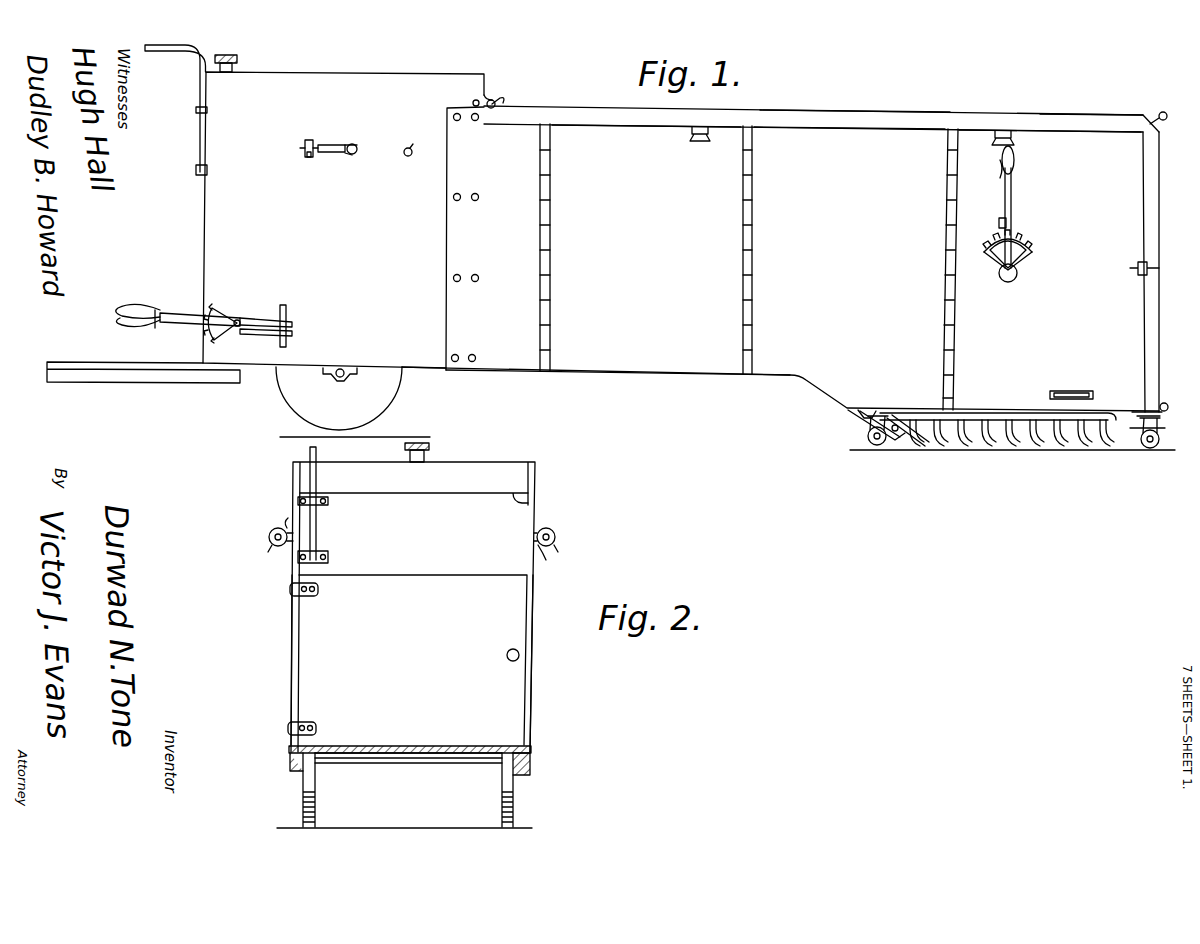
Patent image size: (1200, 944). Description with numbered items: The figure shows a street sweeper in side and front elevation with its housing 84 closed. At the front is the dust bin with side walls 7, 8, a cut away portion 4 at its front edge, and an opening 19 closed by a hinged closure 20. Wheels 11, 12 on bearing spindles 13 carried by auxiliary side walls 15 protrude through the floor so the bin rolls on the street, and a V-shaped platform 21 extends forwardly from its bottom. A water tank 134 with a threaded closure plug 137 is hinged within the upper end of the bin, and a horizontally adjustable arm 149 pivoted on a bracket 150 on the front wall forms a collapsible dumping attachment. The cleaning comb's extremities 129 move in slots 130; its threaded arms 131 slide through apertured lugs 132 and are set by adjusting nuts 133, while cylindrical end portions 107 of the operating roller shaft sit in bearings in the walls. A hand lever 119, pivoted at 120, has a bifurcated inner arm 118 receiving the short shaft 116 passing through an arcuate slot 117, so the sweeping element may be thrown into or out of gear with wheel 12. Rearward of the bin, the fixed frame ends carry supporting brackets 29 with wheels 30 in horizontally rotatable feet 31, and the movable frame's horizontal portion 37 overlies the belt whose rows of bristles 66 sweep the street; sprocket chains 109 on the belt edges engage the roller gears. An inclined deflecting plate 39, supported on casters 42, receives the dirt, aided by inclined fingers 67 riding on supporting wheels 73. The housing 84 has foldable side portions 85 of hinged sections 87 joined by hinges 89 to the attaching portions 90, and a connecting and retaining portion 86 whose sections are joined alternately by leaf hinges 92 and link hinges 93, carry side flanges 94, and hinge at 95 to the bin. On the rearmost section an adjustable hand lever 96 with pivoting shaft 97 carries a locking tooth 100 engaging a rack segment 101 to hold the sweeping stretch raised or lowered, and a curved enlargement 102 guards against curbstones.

In FIG. 2, the cut away portion 4 is at (543, 500).
In FIG. 1, the side wall 7 is at (386, 268).
In FIG. 2, the side wall 7 is at (289, 672).
In FIG. 2, the side wall 8 is at (536, 693).
In FIG. 2, the wheel 11 is at (397, 790).
In FIG. 1, the wheel 12 is at (424, 384).
In FIG. 2, the wheel 12 is at (515, 793).
In FIG. 1, the bearing spindle 13 is at (340, 378).
In FIG. 1, the auxiliary side wall 15 is at (888, 408).
In FIG. 2, the opening 19 is at (418, 573).
In FIG. 2, the hinged closure 20 is at (403, 659).
In FIG. 1, the platform 21 is at (128, 362).
In FIG. 2, the platform 21 is at (414, 758).
In FIG. 1, the supporting bracket 29 is at (1160, 415).
In FIG. 1, the wheel 30 is at (1142, 448).
In FIG. 1, the horizontally rotatable foot 31 is at (1158, 435).
In FIG. 1, the horizontal portion 37 is at (1013, 413).
In FIG. 1, the inclined deflecting plate 39 is at (858, 414).
In FIG. 1, the casters 42 is at (873, 448).
In FIG. 1, the bristles 66 is at (1050, 450).
In FIG. 1, the inclined fingers 67 is at (935, 448).
In FIG. 1, the supporting wheels 73 is at (915, 448).
In FIG. 1, the housing 84 is at (770, 110).
In FIG. 1, the foldable side portions 85 is at (702, 376).
In FIG. 1, the foldable connecting and retaining portion 86 is at (1083, 113).
In FIG. 1, the hinged sections 87 is at (846, 232).
In FIG. 1, the hinges 89 is at (552, 265).
In FIG. 1, the attaching portions 90 is at (478, 238).
In FIG. 1, the hinges 92 is at (1158, 245).
In FIG. 1, the hinges 93 is at (702, 135).
In FIG. 1, the side flanges 94 is at (888, 128).
In FIG. 1, the hinge 95 is at (495, 100).
In FIG. 1, the adjustable hand lever 96 is at (1013, 213).
In FIG. 1, the pivoting shaft 97 is at (1012, 283).
In FIG. 1, the locking tooth 100 is at (999, 222).
In FIG. 1, the rack segment 101 is at (1030, 240).
In FIG. 1, the curved enlargement 102 is at (1073, 390).
In FIG. 1, the cylindrical end portions 107 is at (413, 136).
In FIG. 1, the sprocket chains 109 is at (990, 450).
In FIG. 1, the short shaft 116 is at (298, 325).
In FIG. 1, the arcuate slot 117 is at (286, 306).
In FIG. 1, the bifurcated inner arm 118 is at (262, 334).
In FIG. 1, the adjustable hand lever 119 is at (170, 312).
In FIG. 1, the pivot 120 is at (245, 310).
In FIG. 1, the extremities 129 is at (352, 154).
In FIG. 1, the slots 130 is at (344, 130).
In FIG. 2, the threaded arms 131 is at (273, 555).
In FIG. 1, the apertured lugs 132 is at (310, 158).
In FIG. 2, the apertured lugs 132 is at (282, 520).
In FIG. 1, the adjusting nut 133 is at (309, 140).
In FIG. 2, the adjusting nut 133 is at (570, 538).
In FIG. 2, the water tank 134 is at (540, 472).
In FIG. 1, the threaded closure plug 137 is at (230, 55).
In FIG. 2, the threaded closure plug 137 is at (430, 447).
In FIG. 1, the horizontally adjustable arm 149 is at (163, 52).
In FIG. 2, the horizontally adjustable arm 149 is at (310, 474).
In FIG. 1, the bracket 150 is at (196, 140).
In FIG. 2, the bracket 150 is at (322, 512).